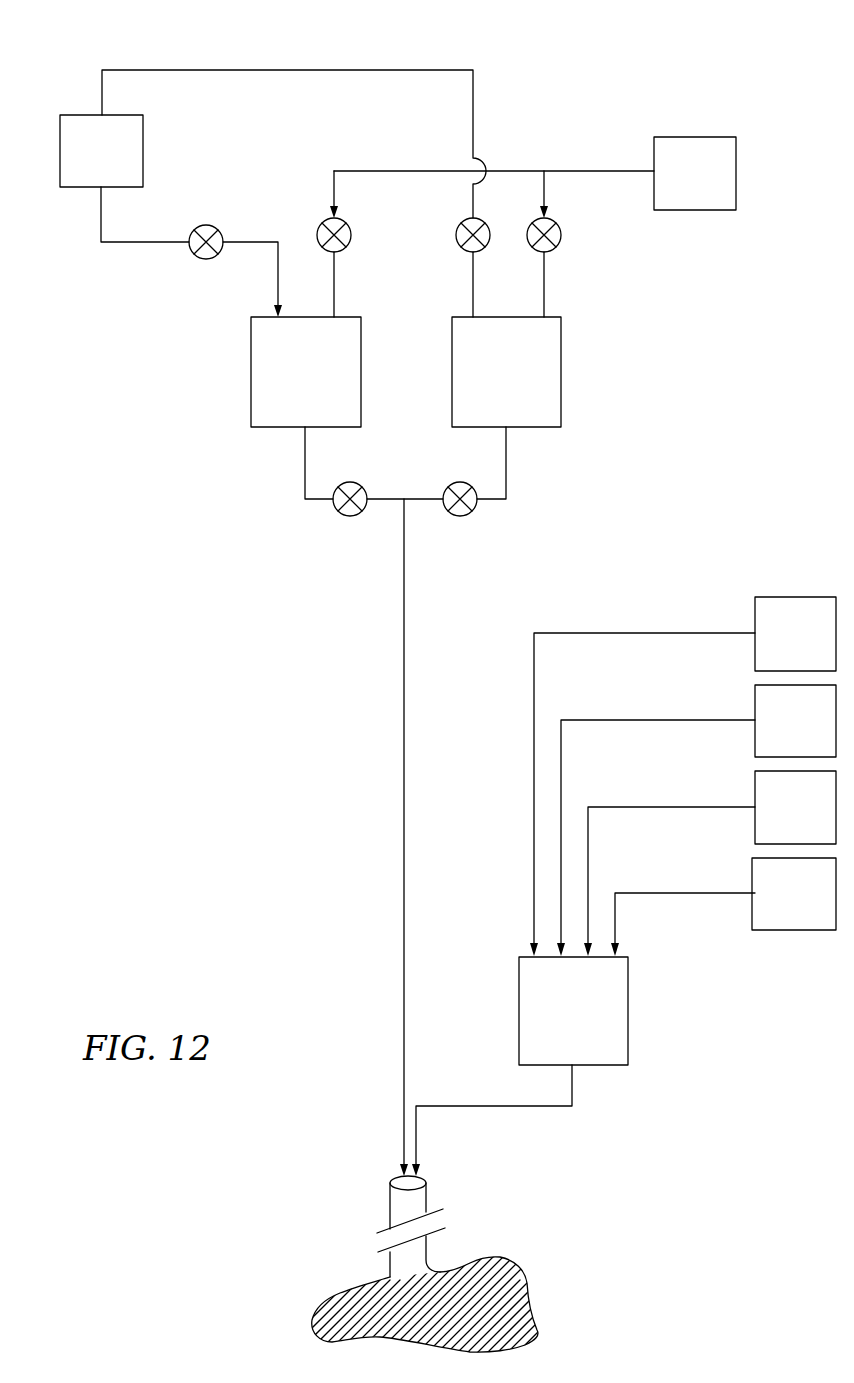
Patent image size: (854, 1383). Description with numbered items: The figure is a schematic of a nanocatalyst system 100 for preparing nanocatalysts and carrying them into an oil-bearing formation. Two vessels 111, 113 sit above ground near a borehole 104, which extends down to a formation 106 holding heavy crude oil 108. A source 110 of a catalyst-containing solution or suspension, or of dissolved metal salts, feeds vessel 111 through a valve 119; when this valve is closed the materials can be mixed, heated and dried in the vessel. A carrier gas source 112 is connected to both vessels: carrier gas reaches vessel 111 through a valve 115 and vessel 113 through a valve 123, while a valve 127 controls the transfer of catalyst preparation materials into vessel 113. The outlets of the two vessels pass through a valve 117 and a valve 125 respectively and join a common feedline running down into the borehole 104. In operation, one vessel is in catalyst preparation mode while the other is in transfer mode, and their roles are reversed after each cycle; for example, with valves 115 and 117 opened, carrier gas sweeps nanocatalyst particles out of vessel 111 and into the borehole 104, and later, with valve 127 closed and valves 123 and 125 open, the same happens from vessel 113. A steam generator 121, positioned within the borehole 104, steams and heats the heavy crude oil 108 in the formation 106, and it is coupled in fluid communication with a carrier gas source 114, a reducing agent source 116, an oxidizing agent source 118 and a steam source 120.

The nanocatalyst system 100 is at (614, 58).
The borehole 104 is at (425, 1180).
The formation 106 is at (477, 1258).
The heavy crude oil 108 is at (527, 1293).
The source 110 is at (80, 163).
The vessel 111 is at (285, 383).
The carrier gas source 112 is at (674, 186).
The vessel 113 is at (485, 383).
The carrier gas source 114 is at (774, 643).
The valve 115 is at (351, 243).
The reducing agent source 116 is at (774, 730).
The valve 117 is at (338, 511).
The oxidizing agent source 118 is at (774, 817).
The valve 119 is at (190, 250).
The steam source 120 is at (774, 903).
The steam generator 121 is at (552, 1021).
The valve 123 is at (561, 236).
The valve 125 is at (470, 514).
The valve 127 is at (456, 238).